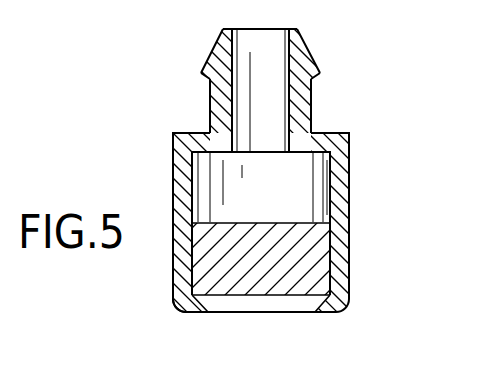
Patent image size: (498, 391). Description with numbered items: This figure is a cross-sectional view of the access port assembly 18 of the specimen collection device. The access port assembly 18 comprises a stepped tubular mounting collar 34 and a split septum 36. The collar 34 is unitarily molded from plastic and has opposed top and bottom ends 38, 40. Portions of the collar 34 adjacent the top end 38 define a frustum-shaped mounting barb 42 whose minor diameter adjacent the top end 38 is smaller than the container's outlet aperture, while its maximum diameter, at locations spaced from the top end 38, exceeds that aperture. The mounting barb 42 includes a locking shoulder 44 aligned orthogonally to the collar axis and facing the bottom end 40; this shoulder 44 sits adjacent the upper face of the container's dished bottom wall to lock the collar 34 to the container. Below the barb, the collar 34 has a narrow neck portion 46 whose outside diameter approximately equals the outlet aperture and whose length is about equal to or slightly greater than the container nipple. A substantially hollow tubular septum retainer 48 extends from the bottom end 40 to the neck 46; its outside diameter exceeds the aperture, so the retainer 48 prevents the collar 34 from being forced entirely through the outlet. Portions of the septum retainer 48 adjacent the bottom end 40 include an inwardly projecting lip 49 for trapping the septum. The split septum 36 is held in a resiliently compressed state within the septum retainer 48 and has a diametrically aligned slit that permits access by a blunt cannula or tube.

The access port assembly 18 is at (358, 83).
The stepped tubular mounting collar 34 is at (358, 194).
The split septum 36 is at (231, 221).
The top end 38 is at (279, 28).
The bottom end 40 is at (184, 311).
The mounting barb 42 is at (218, 53).
The locking shoulder 44 is at (209, 77).
The neck portion 46 is at (211, 119).
The septum retainer 48 is at (173, 157).
The inwardly projecting lip 49 is at (313, 301).